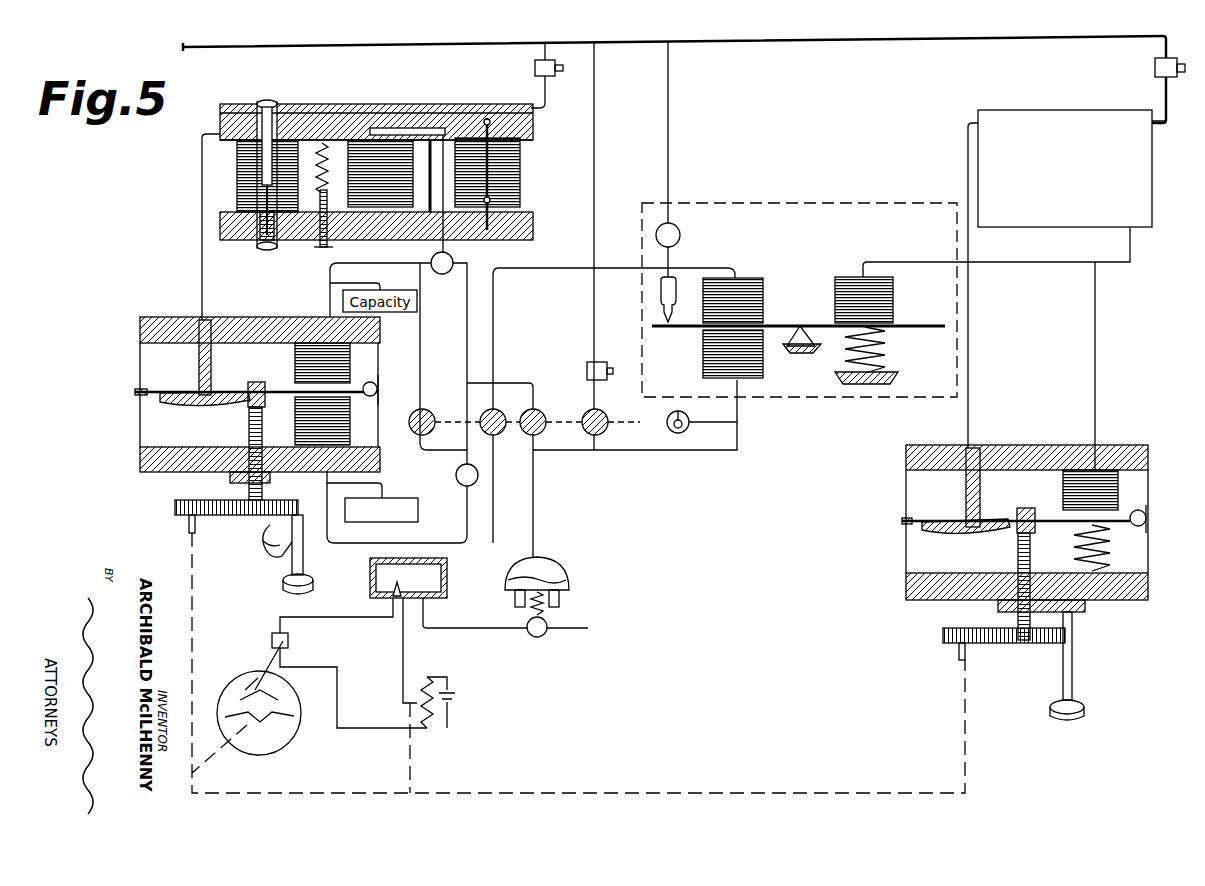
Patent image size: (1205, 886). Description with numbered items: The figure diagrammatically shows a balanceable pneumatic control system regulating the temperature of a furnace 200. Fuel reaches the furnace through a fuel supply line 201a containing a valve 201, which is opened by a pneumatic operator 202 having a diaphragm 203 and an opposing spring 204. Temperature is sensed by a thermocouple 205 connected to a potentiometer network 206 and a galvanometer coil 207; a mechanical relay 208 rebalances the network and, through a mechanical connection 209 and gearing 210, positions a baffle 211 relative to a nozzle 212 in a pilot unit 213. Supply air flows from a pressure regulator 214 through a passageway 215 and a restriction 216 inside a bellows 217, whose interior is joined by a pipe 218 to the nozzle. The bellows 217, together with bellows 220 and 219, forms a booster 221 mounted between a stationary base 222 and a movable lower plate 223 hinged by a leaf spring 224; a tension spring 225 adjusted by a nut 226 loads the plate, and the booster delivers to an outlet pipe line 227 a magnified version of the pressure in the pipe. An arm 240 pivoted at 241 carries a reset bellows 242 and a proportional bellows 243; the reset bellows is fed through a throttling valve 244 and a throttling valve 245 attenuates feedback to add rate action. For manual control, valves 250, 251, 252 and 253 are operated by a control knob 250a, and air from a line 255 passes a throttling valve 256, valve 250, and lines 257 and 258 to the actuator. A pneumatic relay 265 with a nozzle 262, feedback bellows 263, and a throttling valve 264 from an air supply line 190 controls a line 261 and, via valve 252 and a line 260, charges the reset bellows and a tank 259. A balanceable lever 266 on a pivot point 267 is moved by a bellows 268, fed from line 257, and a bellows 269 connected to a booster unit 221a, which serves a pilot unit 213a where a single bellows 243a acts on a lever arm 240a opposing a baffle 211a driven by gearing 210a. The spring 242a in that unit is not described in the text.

The air supply line 190 is at (452, 45).
The pressure regulator 214 is at (535, 68).
The stationary base 222 is at (235, 105).
The pneumatic relay (booster) 221 is at (306, 70).
The passageway 215 is at (368, 108).
The bellows 220 is at (358, 140).
The restriction 216 is at (240, 185).
The bellows 217 is at (240, 200).
The movable lower plate 223 is at (293, 243).
The pipe 218 is at (202, 240).
The tension spring 225 is at (320, 150).
The nut 226 is at (322, 241).
The flexible hinge (leaf spring) 224 is at (430, 140).
The outlet pipe line 227 is at (456, 128).
The bellows 219 is at (522, 172).
The throttling valve 245 is at (445, 275).
The pilot unit 213 is at (279, 302).
The nozzle 212 is at (200, 383).
The baffle 211 is at (252, 385).
The arm (lever) 240 is at (272, 390).
The pivot 241 is at (375, 382).
The proportional bellows 243 is at (352, 346).
The reset bellows 242 is at (352, 425).
The gearing 210 is at (248, 515).
The mechanical connection 209 is at (192, 590).
The tank 259 is at (418, 513).
The valve 251 is at (428, 410).
The throttling valve 244 is at (456, 475).
The valve 252 is at (500, 408).
The valve 253 is at (542, 410).
The line 258 is at (538, 533).
The line 260 is at (498, 504).
The line 261 is at (533, 266).
The line 255 is at (592, 288).
The valve 250 is at (543, 429).
The valve-actuating device (control knob) 250a is at (690, 424).
The line 257 is at (690, 452).
The throttling valve 256 is at (592, 362).
The throttling valve 264 is at (681, 234).
The nozzle 262 is at (660, 292).
The bellows (feedback bellows) 263 is at (747, 277).
The bellows 268 is at (705, 362).
The pneumatic relay 265 is at (892, 230).
The balanceable lever 266 is at (765, 323).
The pivot point 267 is at (800, 348).
The bellows 269 is at (880, 308).
The booster unit 221a is at (1087, 174).
The pilot unit 213a is at (1156, 416).
The baffle 211a is at (943, 522).
The lever arm 240a is at (1055, 520).
The bellows 243a is at (1120, 490).
The spring 242a is at (1112, 550).
The gearing 210a is at (1030, 645).
The furnace 200 is at (442, 588).
The thermocouple 205 is at (392, 588).
The galvanometer coil 207 is at (290, 640).
The mechanical relay 208 is at (234, 666).
The potentiometer network 206 is at (440, 712).
The fuel supply line 201a is at (480, 627).
The valve 201 is at (542, 636).
The pneumatic operator (actuator) 202 is at (512, 576).
The diaphragm 203 is at (556, 586).
The spring 204 is at (550, 605).